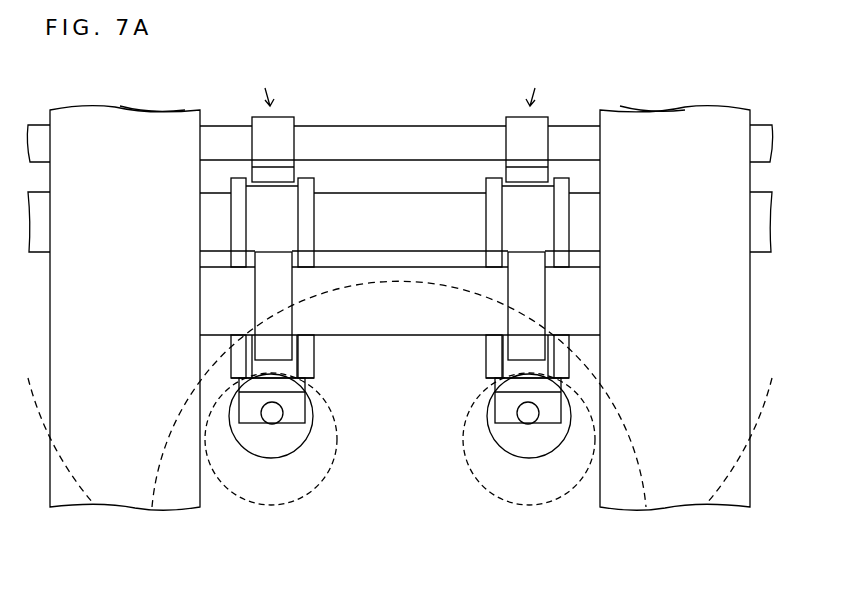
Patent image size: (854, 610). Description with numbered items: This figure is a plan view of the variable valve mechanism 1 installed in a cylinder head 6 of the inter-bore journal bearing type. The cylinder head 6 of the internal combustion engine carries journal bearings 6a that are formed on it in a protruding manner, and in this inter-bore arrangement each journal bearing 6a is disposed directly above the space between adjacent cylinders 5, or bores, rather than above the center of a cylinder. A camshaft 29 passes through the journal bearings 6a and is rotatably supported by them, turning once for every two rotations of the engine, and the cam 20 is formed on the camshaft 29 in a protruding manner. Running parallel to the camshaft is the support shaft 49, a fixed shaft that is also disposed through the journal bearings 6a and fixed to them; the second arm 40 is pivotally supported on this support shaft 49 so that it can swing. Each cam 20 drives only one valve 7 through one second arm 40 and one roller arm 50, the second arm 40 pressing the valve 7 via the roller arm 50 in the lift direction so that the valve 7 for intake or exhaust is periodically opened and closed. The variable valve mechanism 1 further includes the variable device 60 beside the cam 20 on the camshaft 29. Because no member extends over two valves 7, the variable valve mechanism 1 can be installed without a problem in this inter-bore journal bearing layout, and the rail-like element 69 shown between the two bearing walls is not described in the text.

The variable valve mechanism 1 is at (400, 86).
The cylinder 5 is at (78, 483).
The cylinder head 6 is at (83, 96).
The journal bearing 6a is at (143, 122).
The valve 7 is at (283, 499).
The cam 20 is at (277, 297).
The camshaft 29 is at (393, 336).
The second arm 40 is at (316, 222).
The support shaft 49 is at (393, 199).
The roller arm 50 is at (310, 355).
The variable device 60 is at (296, 143).
The rail 69 is at (393, 126).